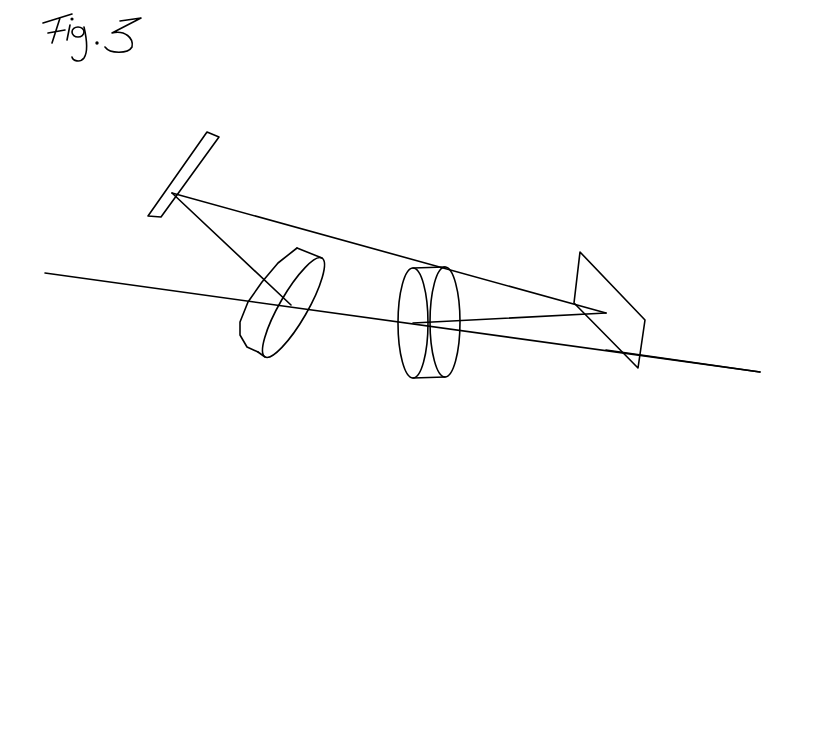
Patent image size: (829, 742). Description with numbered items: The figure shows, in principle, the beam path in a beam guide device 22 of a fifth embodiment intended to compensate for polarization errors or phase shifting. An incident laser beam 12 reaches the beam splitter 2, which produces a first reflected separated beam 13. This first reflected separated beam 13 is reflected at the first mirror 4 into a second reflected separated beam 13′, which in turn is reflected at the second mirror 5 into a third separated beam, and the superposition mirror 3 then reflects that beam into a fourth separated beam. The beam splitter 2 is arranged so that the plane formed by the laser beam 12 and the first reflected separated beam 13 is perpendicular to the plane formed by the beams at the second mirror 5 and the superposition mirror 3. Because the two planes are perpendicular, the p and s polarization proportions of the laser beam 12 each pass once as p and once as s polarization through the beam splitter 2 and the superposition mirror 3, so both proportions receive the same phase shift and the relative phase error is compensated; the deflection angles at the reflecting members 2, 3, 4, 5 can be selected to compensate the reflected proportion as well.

The beam splitter 2 is at (260, 342).
The superposition mirror 3 is at (430, 363).
The first mirror 4 is at (200, 134).
The second mirror 5 is at (598, 278).
The laser beam 12 is at (127, 287).
The first reflected separated beam 13 is at (218, 237).
The second reflected separated beam 13′ is at (318, 231).
The beam guide device 22 is at (315, 518).